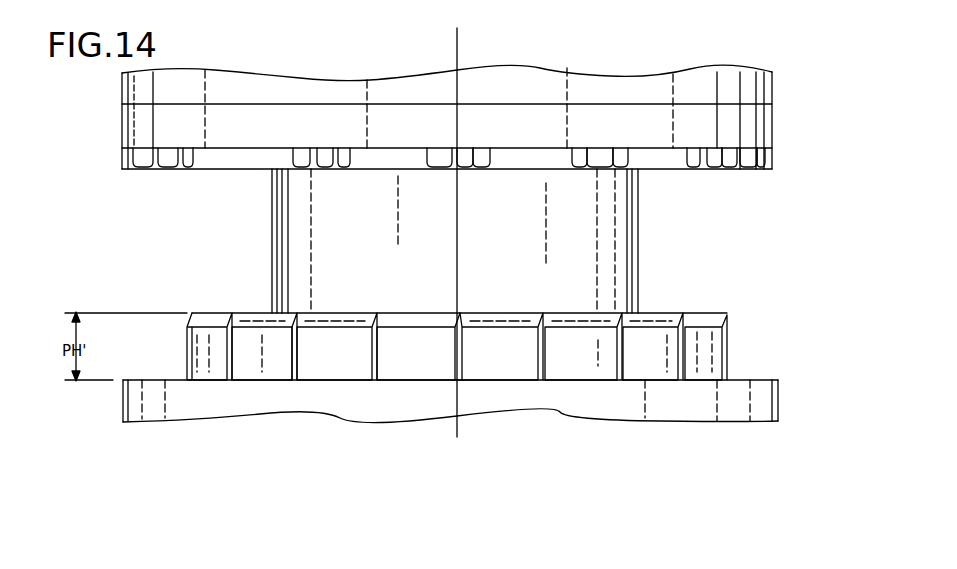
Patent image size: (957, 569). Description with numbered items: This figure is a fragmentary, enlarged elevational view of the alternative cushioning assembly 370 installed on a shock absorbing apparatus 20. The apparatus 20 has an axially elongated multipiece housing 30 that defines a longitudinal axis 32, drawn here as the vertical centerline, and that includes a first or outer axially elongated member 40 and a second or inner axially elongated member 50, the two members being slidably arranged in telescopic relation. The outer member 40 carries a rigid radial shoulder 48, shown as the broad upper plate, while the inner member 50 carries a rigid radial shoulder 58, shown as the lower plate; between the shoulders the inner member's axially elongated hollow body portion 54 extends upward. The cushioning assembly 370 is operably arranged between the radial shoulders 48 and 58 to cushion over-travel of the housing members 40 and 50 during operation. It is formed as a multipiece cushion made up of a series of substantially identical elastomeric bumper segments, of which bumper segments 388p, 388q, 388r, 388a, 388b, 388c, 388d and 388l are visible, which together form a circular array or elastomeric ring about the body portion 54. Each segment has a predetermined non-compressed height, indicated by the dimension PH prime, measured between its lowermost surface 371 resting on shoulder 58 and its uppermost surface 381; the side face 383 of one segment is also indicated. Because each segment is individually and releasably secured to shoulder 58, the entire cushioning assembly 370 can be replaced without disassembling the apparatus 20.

The shock absorbing apparatus 20 is at (257, 55).
The multipiece housing 30 is at (540, 52).
The longitudinal axis 32 is at (458, 34).
The first or outer axially elongated member 40 is at (112, 101).
The radial shoulder 48 is at (136, 131).
The body portion 54 is at (627, 207).
The second or inner axially elongated member 50 is at (618, 445).
The radial shoulder 58 is at (745, 416).
The cushioning assembly 370 is at (755, 317).
The lowermost surface 371 is at (484, 385).
The uppermost surface 381 is at (500, 313).
The block side surface 383 is at (303, 385).
The bumper segment 388p is at (215, 320).
The bumper segment 388q is at (250, 370).
The bumper segment 388r is at (336, 373).
The bumper segment 388a is at (409, 373).
The bumper segment 388b is at (512, 372).
The bumper segment 388c is at (578, 368).
The bumper segment 388d is at (653, 340).
The bumper segment 388l is at (718, 362).